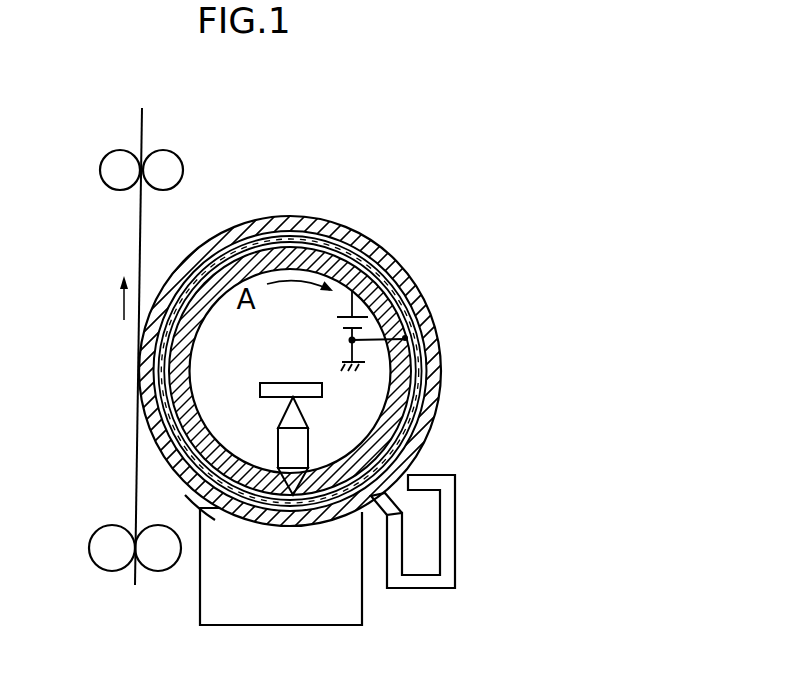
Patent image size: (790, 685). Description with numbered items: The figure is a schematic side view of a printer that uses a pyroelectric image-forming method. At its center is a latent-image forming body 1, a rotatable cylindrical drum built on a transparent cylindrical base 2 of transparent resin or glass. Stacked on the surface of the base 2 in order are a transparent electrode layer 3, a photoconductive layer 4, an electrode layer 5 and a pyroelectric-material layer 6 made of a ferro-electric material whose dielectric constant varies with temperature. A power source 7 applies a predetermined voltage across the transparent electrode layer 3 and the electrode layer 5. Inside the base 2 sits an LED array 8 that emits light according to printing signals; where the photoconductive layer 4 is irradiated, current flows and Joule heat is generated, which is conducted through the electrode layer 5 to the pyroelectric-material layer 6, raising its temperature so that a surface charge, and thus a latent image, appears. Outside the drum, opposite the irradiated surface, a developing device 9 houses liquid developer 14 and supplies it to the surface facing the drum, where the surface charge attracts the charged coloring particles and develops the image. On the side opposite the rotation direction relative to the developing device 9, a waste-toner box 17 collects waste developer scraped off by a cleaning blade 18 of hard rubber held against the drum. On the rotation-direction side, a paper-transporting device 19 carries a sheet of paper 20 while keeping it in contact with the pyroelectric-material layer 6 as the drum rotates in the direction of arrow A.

The latent-image forming body 1 is at (332, 214).
The transparent cylindrical base 2 is at (413, 422).
The transparent electrode layer 3 is at (425, 378).
The photoconductive layer 4 is at (425, 312).
The electrode layer 5 is at (398, 272).
The pyroelectric-material layer 6 is at (378, 242).
The power source 7 is at (420, 337).
The LED array 8 is at (280, 380).
The developing device 9 is at (347, 592).
The liquid developer 14 is at (197, 500).
The waste-toner box 17 is at (458, 492).
The cleaning blade 18 is at (400, 505).
The paper-transporting device 19 is at (168, 158).
The sheet of paper 20 is at (140, 244).